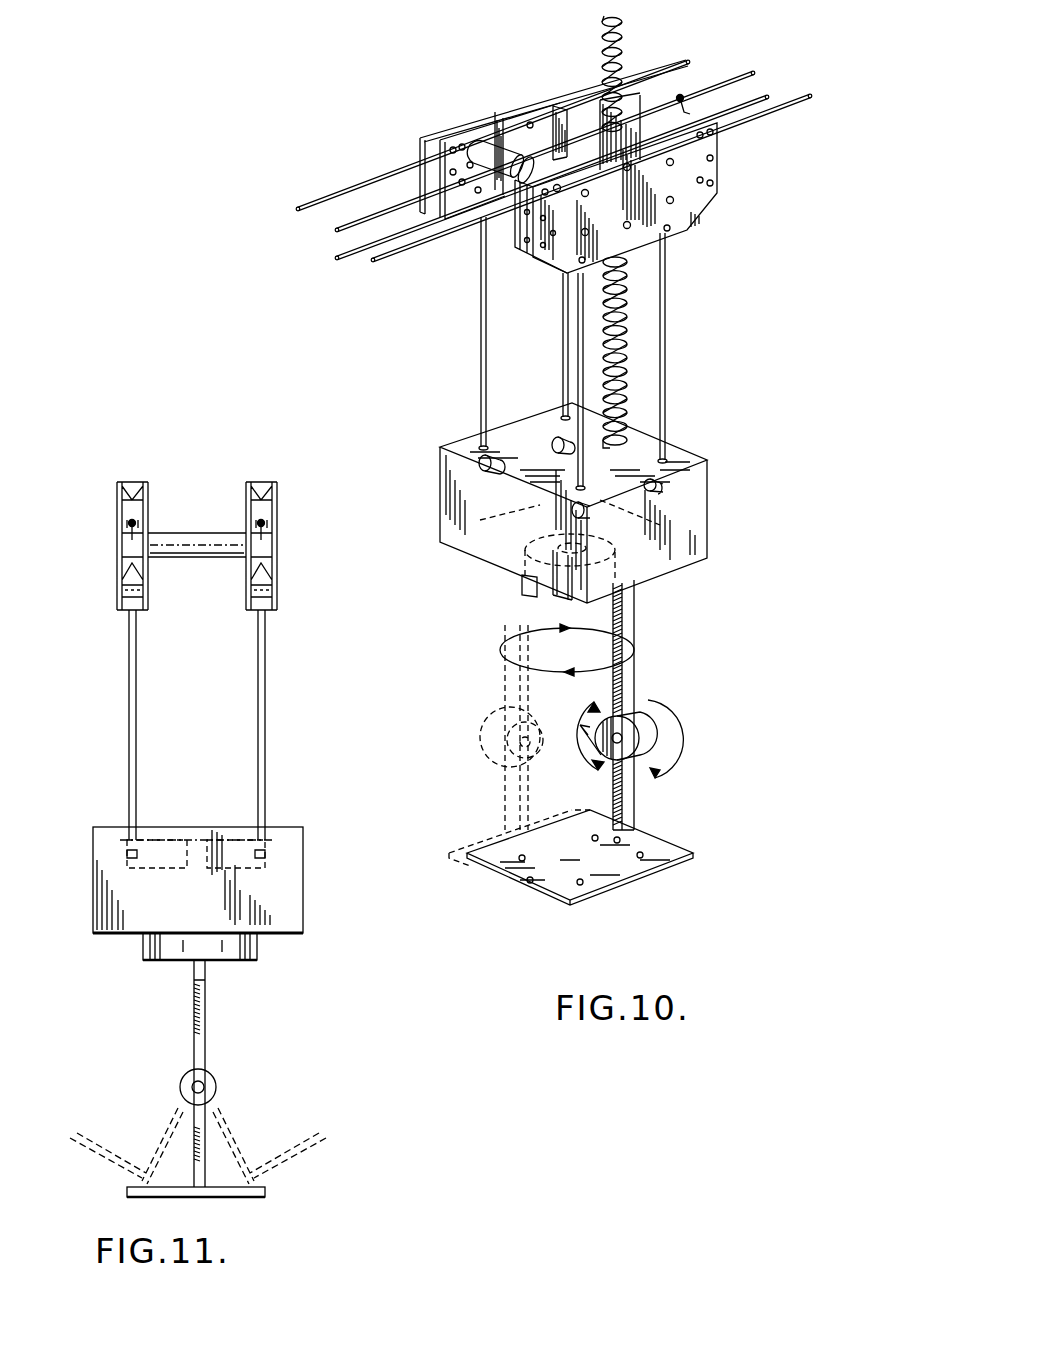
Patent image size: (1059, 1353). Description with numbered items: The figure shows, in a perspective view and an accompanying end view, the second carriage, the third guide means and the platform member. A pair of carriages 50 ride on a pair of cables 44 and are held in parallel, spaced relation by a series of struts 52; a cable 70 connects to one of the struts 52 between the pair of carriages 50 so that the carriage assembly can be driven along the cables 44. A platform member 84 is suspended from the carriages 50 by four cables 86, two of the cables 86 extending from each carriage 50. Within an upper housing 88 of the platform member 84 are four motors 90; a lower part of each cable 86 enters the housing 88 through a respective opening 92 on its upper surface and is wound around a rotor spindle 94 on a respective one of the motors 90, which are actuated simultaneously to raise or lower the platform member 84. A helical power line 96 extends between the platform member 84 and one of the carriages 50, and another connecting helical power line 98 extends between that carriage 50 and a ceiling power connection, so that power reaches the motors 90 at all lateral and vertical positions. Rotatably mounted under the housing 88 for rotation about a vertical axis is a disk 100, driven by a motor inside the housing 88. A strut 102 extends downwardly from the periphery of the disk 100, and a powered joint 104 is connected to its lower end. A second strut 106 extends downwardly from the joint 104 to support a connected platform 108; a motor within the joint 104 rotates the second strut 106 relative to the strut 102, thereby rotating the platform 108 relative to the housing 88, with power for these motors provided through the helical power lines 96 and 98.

In FIG. 10, the cables 44 is at (696, 70).
In FIG. 11, the cables 44 is at (131, 524).
In FIG. 10, the carriages 50 is at (444, 106).
In FIG. 11, the carriages 50 is at (107, 496).
In FIG. 10, the struts 52 is at (493, 144).
In FIG. 11, the struts 52 is at (183, 540).
In FIG. 10, the cable 70 is at (684, 102).
In FIG. 10, the platform member 84 is at (791, 439).
In FIG. 10, the cables 86 is at (481, 287).
In FIG. 11, the cables 86 is at (128, 720).
In FIG. 10, the upper housing 88 is at (610, 503).
In FIG. 11, the upper housing 88 is at (297, 843).
In FIG. 10, the motors 90 is at (560, 446).
In FIG. 11, the motors 90 is at (232, 840).
In FIG. 10, the opening 92 is at (694, 460).
In FIG. 10, the rotor spindle 94 is at (667, 490).
In FIG. 10, the helical power line 96 is at (627, 305).
In FIG. 10, the connecting helical power line 98 is at (624, 63).
In FIG. 10, the disk 100 is at (499, 586).
In FIG. 11, the disk 100 is at (262, 948).
In FIG. 10, the strut 102 is at (628, 607).
In FIG. 11, the strut 102 is at (204, 990).
In FIG. 10, the powered joint 104 is at (648, 723).
In FIG. 11, the powered joint 104 is at (205, 1087).
In FIG. 10, the second strut 106 is at (633, 813).
In FIG. 11, the second strut 106 is at (207, 1137).
In FIG. 10, the platform 108 is at (600, 880).
In FIG. 11, the platform 108 is at (257, 1194).